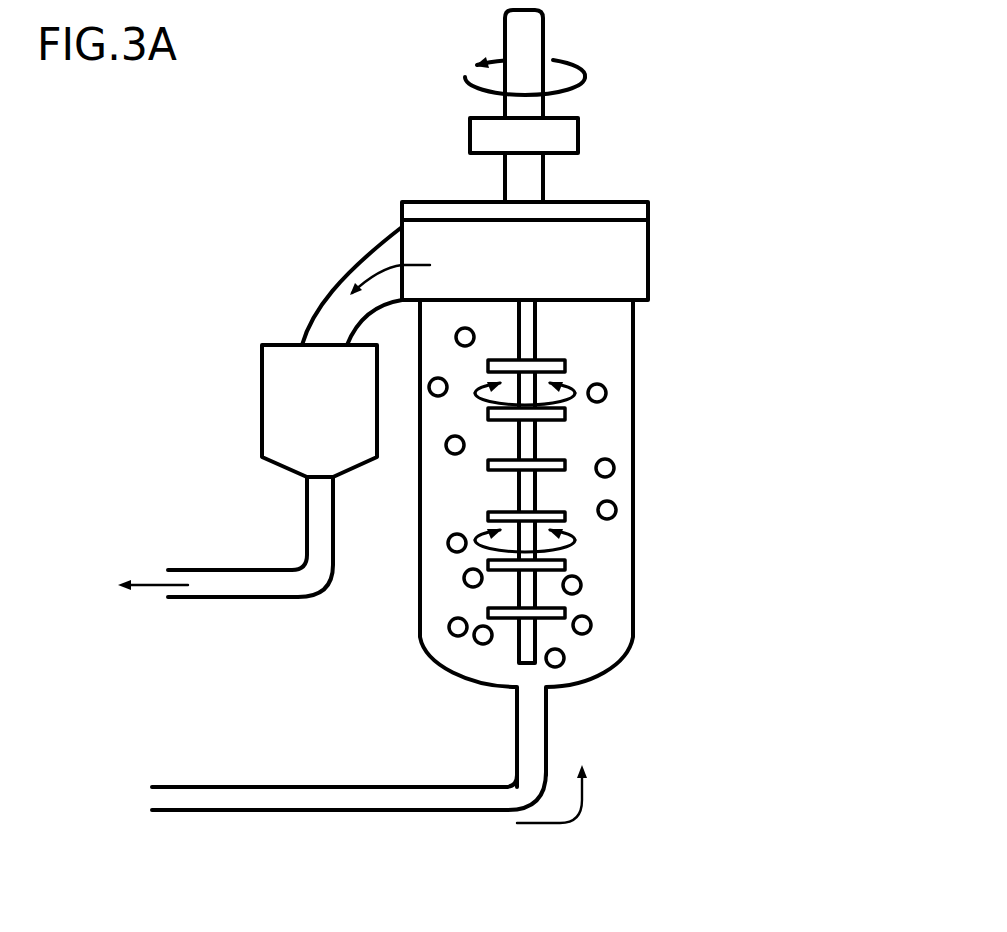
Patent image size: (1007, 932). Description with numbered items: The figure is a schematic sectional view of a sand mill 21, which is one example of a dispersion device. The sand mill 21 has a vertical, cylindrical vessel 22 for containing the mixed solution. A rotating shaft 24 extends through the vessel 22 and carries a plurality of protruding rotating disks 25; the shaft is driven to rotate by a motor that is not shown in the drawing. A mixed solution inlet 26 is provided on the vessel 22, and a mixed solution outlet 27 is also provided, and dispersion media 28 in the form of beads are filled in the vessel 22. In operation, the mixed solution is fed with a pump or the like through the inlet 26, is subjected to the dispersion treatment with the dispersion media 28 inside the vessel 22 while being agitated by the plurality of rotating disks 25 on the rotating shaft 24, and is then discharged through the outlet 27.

The sand mill 21 is at (725, 305).
The vessel 22 is at (421, 618).
The rotating shaft 24 is at (528, 491).
The rotating disks 25 is at (566, 558).
The mixed solution inlet 26 is at (340, 800).
The mixed solution outlet 27 is at (333, 315).
The dispersion media 28 is at (612, 462).